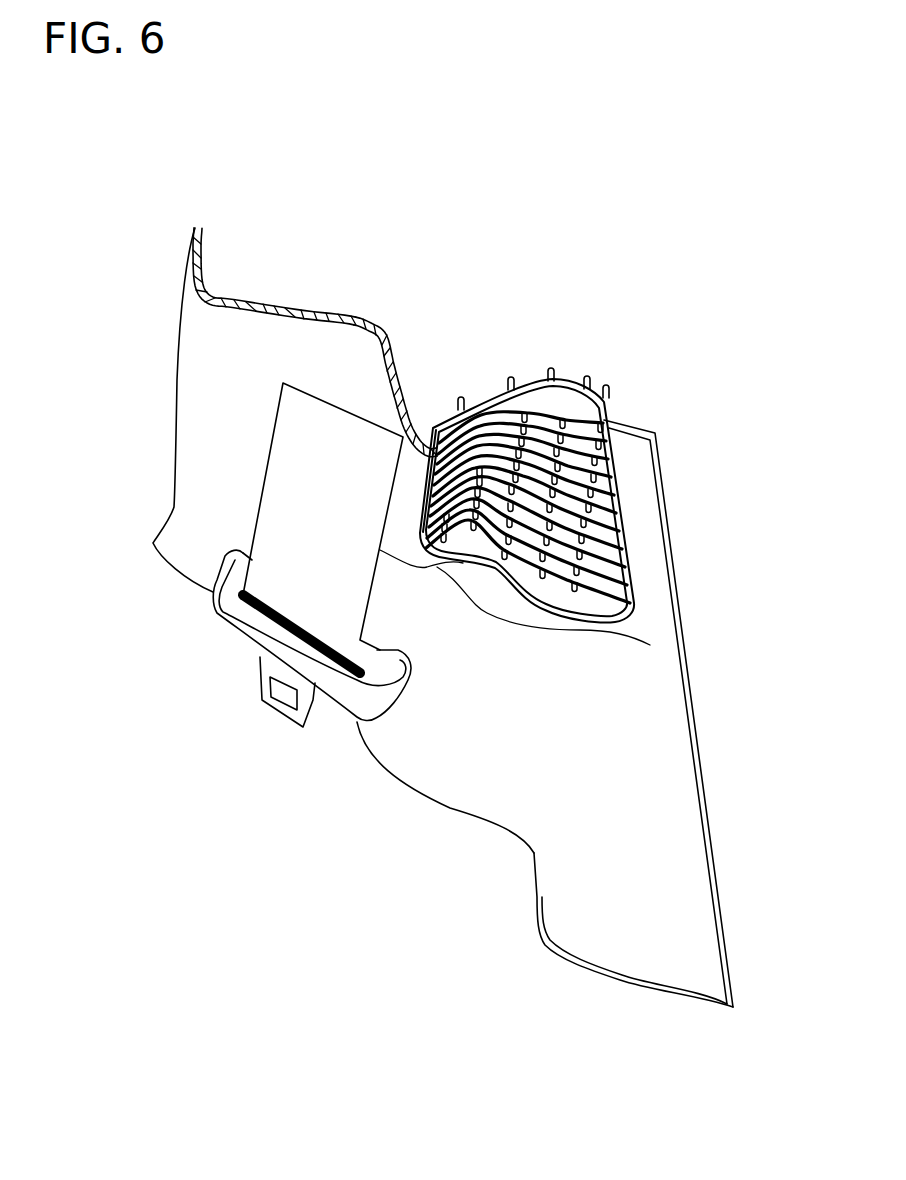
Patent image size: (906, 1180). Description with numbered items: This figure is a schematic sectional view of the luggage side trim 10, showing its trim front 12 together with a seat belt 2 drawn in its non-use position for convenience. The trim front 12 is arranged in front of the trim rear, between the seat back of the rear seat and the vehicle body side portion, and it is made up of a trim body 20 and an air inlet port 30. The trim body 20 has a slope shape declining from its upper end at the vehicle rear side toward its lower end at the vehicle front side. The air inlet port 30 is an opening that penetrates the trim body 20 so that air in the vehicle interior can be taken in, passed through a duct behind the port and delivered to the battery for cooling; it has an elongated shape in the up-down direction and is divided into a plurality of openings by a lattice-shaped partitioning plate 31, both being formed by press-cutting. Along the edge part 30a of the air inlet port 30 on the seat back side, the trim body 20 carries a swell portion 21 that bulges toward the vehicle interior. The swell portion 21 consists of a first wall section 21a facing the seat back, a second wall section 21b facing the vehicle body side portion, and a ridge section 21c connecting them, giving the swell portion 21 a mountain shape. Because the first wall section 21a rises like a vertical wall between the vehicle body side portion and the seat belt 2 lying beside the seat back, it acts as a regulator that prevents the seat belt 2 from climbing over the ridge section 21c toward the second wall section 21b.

The seat belt 2 is at (297, 590).
The luggage side trim 10 is at (632, 562).
The trim front 12 is at (468, 828).
The trim body 20 is at (663, 753).
The swell portion 21 is at (370, 400).
The first wall section 21a is at (406, 432).
The second wall section 21b is at (650, 645).
The ridge section 21c is at (412, 490).
The air inlet port 30 is at (638, 545).
The edge part 30a is at (433, 427).
The partitioning plate 31 is at (565, 400).